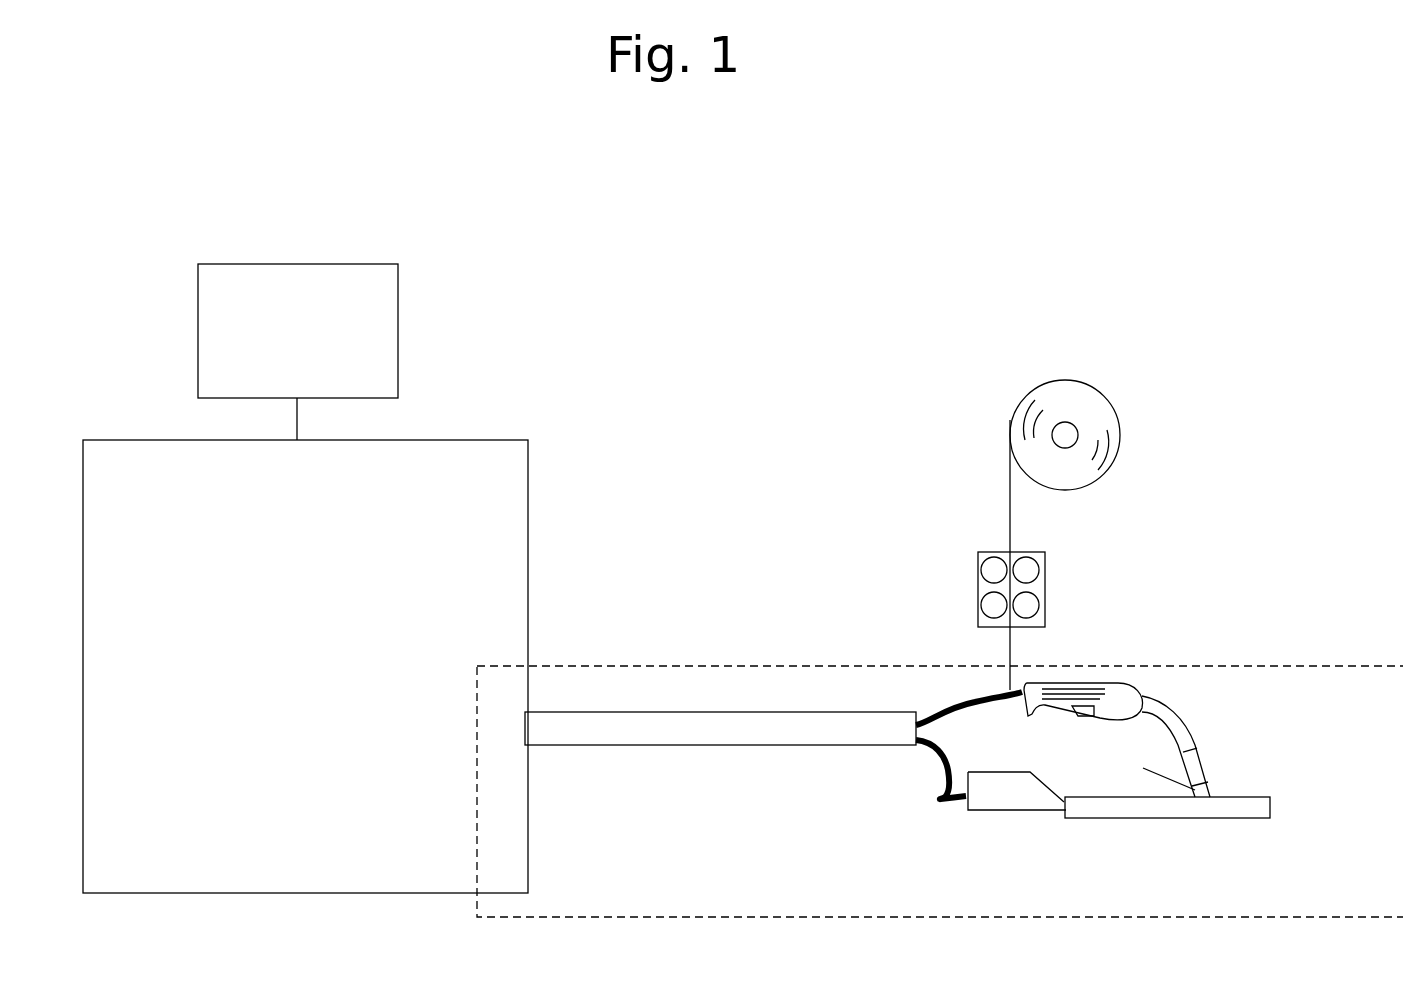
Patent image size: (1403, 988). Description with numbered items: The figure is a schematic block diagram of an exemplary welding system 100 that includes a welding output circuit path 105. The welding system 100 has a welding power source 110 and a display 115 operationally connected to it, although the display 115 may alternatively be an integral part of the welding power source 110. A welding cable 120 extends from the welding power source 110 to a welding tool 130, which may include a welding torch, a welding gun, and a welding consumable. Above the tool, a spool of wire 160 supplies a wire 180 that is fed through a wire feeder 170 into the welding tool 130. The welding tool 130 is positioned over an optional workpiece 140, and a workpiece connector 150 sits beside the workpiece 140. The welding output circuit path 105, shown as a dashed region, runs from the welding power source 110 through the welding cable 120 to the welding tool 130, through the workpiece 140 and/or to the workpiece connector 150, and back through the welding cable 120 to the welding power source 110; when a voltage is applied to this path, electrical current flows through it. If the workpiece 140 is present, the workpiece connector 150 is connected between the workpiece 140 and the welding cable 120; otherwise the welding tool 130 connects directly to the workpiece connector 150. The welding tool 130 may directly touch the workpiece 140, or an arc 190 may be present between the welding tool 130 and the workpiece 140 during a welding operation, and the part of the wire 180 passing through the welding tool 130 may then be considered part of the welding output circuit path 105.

The welding system 100 is at (990, 254).
The welding output circuit path 105 is at (720, 666).
The welding power source 110 is at (275, 781).
The display 115 is at (398, 339).
The welding cable 120 is at (697, 745).
The welding tool 130 is at (1147, 690).
The workpiece 140 is at (1152, 818).
The workpiece connector 150 is at (1002, 803).
The spool of wire 160 is at (1120, 436).
The wire feeder 170 is at (1047, 590).
The wire 180 is at (1016, 645).
The arc 190 is at (1137, 773).